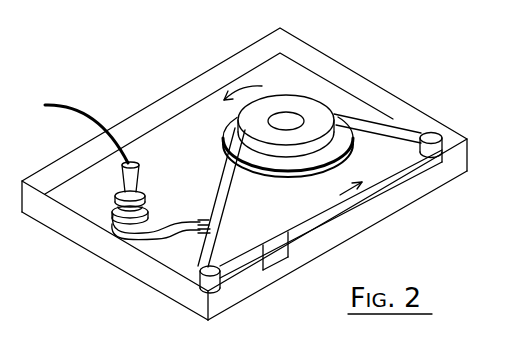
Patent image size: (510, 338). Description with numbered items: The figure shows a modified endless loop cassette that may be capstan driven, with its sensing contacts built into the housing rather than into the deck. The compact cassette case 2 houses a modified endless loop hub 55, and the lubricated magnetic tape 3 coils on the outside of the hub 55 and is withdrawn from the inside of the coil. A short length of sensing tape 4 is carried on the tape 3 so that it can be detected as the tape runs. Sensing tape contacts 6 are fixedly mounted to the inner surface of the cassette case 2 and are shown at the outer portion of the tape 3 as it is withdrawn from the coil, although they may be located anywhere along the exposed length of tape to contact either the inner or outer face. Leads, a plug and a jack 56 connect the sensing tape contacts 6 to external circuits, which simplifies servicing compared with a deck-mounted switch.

The compact cassette case 2 is at (347, 68).
The modified endless loop hub 55 is at (323, 107).
The lubricated magnetic tape 3 is at (229, 196).
The short length of sensing tape 4 is at (280, 243).
The jack 56 is at (145, 185).
The sensing tape contacts 6 is at (190, 219).